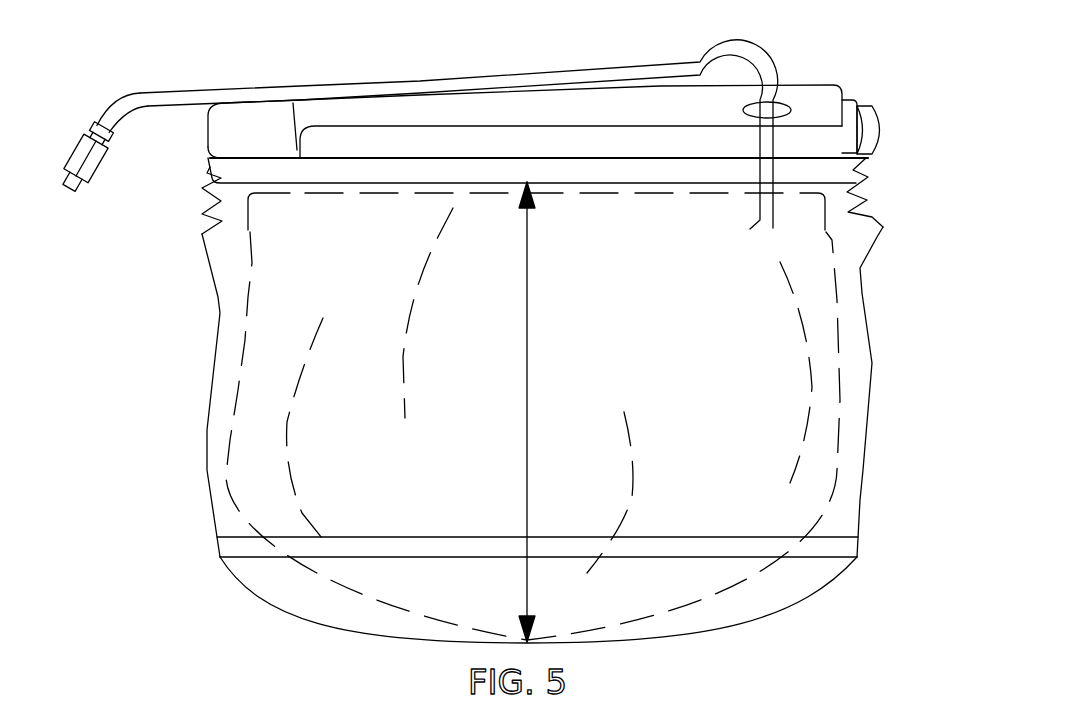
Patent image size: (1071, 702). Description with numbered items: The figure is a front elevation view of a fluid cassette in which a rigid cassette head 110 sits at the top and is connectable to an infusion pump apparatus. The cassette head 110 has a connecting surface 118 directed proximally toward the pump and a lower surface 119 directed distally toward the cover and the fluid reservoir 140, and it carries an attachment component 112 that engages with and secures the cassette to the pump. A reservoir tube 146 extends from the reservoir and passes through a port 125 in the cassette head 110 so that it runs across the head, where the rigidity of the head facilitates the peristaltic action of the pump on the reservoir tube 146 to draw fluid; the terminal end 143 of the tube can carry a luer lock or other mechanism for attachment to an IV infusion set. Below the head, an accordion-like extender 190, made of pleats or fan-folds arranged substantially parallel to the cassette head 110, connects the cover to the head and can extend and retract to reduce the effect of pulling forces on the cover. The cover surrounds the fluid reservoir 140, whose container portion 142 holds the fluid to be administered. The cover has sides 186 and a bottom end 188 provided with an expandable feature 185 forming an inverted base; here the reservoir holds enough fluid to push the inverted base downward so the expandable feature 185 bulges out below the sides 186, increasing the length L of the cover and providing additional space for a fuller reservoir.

The cassette head 110 is at (213, 123).
The attachment component 112 is at (873, 107).
The connecting surface 118 is at (605, 110).
The lower surface 119 is at (808, 157).
The port 125 is at (785, 110).
The fluid reservoir 140 is at (327, 578).
The container portion 142 is at (278, 345).
The terminal end 143 is at (85, 169).
The reservoir tube 146 is at (333, 93).
The expandable feature 185 is at (297, 617).
The side 186 is at (207, 427).
The bottom end 188 is at (823, 558).
The accordion-like extender 190 is at (205, 186).
The length of the cover L is at (528, 393).